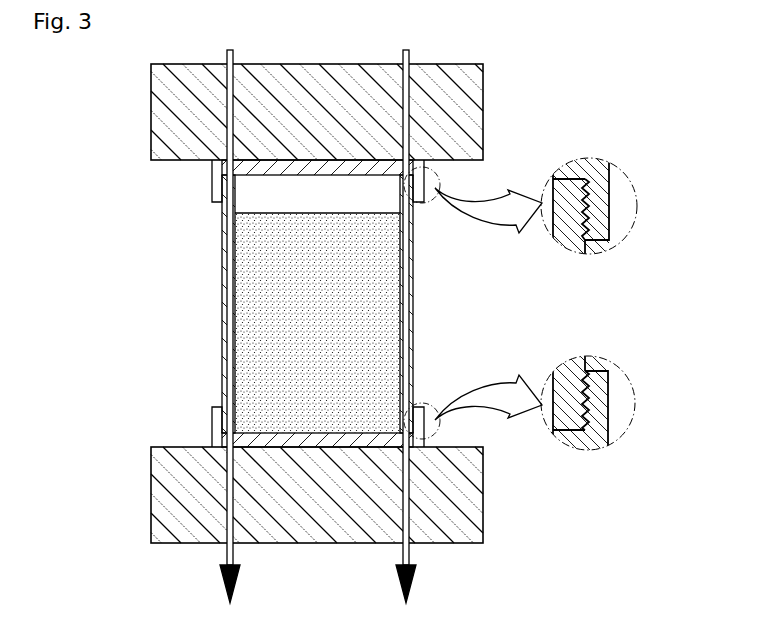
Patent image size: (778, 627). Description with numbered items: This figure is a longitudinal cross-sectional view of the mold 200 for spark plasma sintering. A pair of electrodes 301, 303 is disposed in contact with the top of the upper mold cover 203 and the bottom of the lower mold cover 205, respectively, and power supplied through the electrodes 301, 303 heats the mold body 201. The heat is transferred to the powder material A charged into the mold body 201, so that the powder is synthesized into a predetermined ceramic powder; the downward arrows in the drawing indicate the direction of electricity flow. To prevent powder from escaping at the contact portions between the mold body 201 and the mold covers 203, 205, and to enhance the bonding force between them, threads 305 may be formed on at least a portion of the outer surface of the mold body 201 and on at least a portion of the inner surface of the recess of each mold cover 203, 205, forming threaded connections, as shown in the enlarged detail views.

The mold 200 is at (121, 325).
The mold body 201 is at (412, 282).
The upper mold cover 203 is at (213, 182).
The lower mold cover 205 is at (215, 427).
The electrode 301 is at (163, 116).
The electrode 303 is at (162, 500).
The threads 305 is at (588, 203).
The powder material A is at (247, 237).